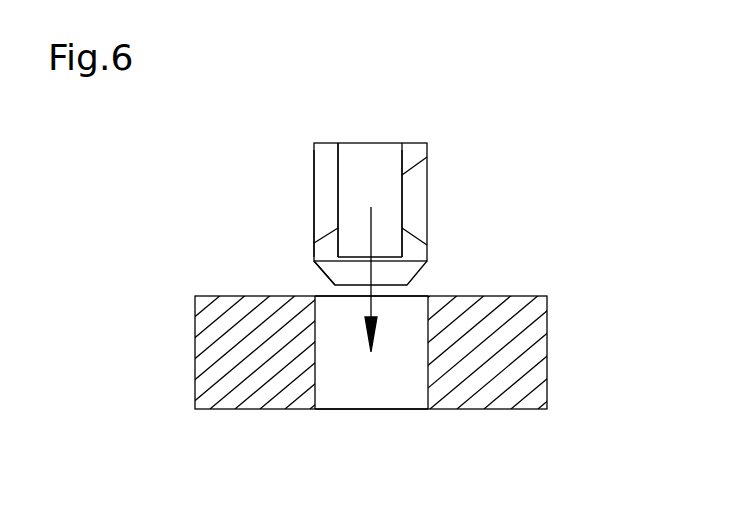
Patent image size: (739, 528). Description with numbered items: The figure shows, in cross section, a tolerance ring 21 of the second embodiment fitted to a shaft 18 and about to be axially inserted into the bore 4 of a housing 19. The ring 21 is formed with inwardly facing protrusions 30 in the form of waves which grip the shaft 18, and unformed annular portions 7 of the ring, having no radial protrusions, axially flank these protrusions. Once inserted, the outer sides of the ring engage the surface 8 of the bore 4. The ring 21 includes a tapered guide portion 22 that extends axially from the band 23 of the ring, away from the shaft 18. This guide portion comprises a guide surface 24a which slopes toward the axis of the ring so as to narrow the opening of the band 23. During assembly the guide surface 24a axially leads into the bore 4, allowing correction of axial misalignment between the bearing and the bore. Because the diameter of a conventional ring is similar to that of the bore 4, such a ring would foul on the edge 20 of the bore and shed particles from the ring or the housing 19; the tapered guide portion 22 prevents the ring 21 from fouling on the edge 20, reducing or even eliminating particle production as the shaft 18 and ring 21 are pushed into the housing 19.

The bore 4 is at (371, 386).
The unformed annular portions 7 is at (357, 178).
The surface of the bore 8 is at (458, 389).
The shaft 18 is at (356, 179).
The housing 19 is at (517, 367).
The edge of the bore 20 is at (314, 308).
The tolerance ring 21 is at (418, 178).
The tapered guide portion 22 is at (410, 283).
The band 23 is at (327, 241).
The guide surface 24a is at (321, 273).
The inwardly facing protrusions 30 is at (402, 196).